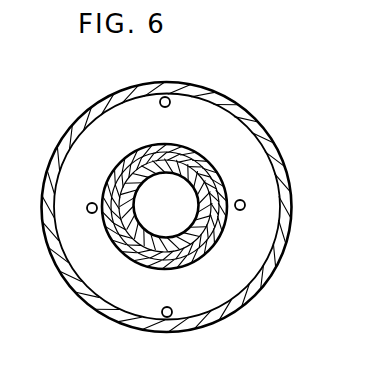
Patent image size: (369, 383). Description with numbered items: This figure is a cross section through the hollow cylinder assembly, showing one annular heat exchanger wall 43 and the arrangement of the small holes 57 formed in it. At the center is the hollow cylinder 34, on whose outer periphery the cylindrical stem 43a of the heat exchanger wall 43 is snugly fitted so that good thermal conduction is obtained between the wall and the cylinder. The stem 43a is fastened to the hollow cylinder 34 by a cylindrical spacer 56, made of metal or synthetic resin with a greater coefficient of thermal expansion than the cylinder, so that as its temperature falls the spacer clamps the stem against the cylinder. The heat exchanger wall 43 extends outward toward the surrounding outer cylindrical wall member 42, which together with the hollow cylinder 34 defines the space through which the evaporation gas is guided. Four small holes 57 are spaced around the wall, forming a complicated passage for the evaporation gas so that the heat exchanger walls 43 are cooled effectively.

The hollow cylinder 34 is at (213, 181).
The outer cylindrical wall member 42 is at (268, 134).
The heat exchanger wall 43 is at (218, 136).
The cylindrical stem 43a is at (190, 252).
The cylindrical spacer 56 is at (216, 235).
The small holes 57 is at (168, 96).